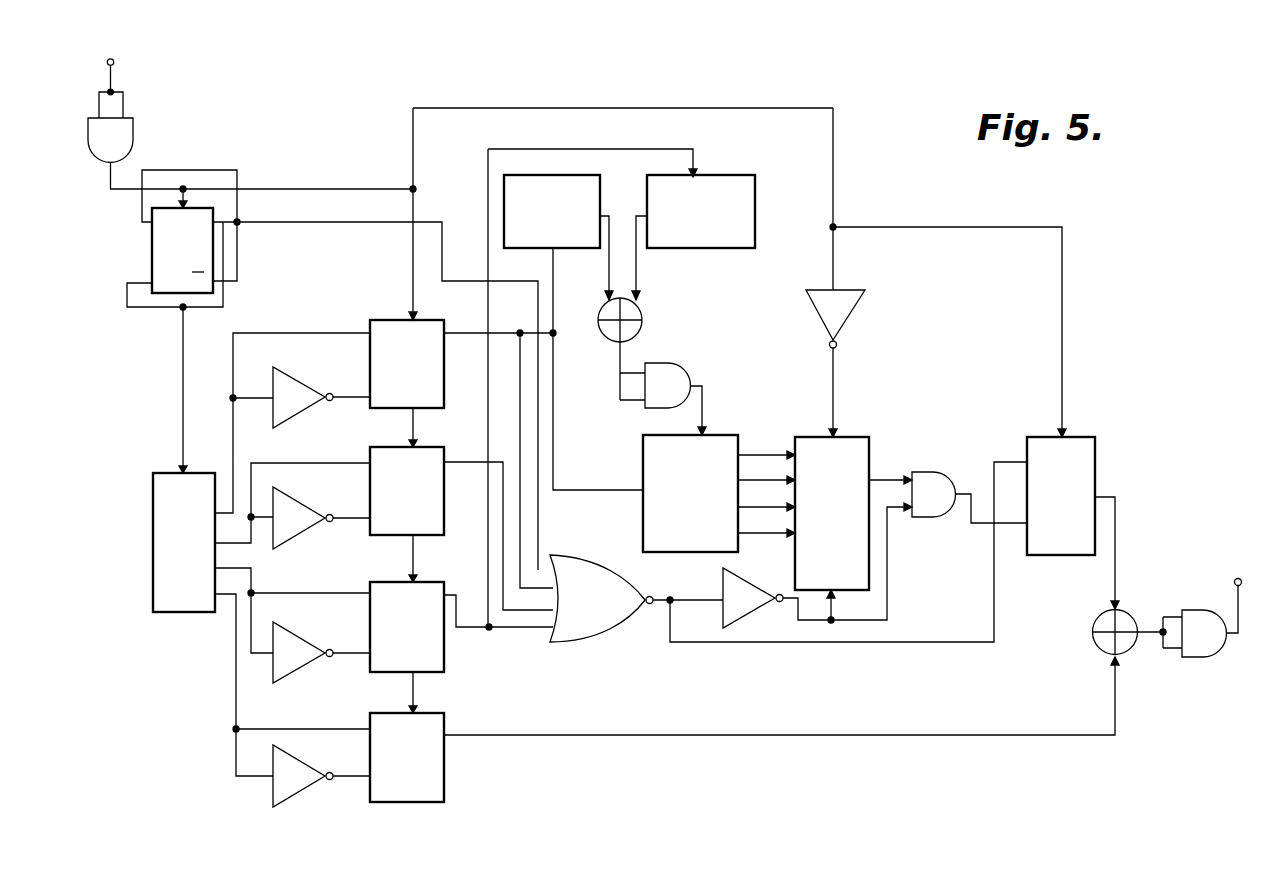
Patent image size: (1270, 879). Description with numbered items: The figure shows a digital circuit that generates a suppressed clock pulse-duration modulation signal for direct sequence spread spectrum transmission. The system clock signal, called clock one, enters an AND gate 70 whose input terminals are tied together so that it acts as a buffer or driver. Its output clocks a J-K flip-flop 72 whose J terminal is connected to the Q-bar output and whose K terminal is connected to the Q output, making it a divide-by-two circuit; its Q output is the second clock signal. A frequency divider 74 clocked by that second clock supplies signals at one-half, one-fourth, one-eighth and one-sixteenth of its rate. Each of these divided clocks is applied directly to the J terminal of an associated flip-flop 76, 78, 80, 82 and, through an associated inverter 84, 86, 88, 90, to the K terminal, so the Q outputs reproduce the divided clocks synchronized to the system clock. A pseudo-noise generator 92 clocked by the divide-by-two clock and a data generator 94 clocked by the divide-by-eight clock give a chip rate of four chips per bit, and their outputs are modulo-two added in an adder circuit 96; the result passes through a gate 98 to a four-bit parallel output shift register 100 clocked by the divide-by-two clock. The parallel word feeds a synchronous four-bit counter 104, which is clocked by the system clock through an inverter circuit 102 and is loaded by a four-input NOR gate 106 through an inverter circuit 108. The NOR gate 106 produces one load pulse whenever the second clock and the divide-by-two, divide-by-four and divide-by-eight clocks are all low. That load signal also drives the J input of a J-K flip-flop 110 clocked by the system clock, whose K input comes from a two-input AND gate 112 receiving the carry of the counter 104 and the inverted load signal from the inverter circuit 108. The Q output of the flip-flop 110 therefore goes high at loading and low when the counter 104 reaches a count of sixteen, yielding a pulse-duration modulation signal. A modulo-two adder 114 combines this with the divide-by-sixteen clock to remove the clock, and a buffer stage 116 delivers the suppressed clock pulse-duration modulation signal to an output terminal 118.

The AND gate 70 is at (133, 130).
The J-K flip-flop 72 is at (152, 268).
The frequency divider 74 is at (163, 613).
The flip-flop 76 is at (444, 381).
The flip-flop 78 is at (444, 510).
The flip-flop 80 is at (444, 577).
The flip-flop 82 is at (445, 717).
The inverter 84 is at (288, 377).
The inverter 86 is at (300, 503).
The inverter 88 is at (305, 636).
The inverter 90 is at (302, 762).
The pseudo-noise generator 92 is at (600, 184).
The data generator 94 is at (755, 182).
The adder circuit 96 is at (643, 308).
The AND gate 98 is at (690, 373).
The shift register 100 is at (733, 435).
The inverter circuit 102 is at (852, 320).
The synchronous four-bit counter 104 is at (860, 437).
The four-input NOR gate 106 is at (645, 584).
The inverter circuit 108 is at (758, 578).
The J-K flip-flop 110 is at (1095, 448).
The two-input AND gate 112 is at (932, 472).
The modulo-2 adder 114 is at (1127, 611).
The buffer stage 116 is at (1203, 657).
The output terminal 118 is at (1233, 587).